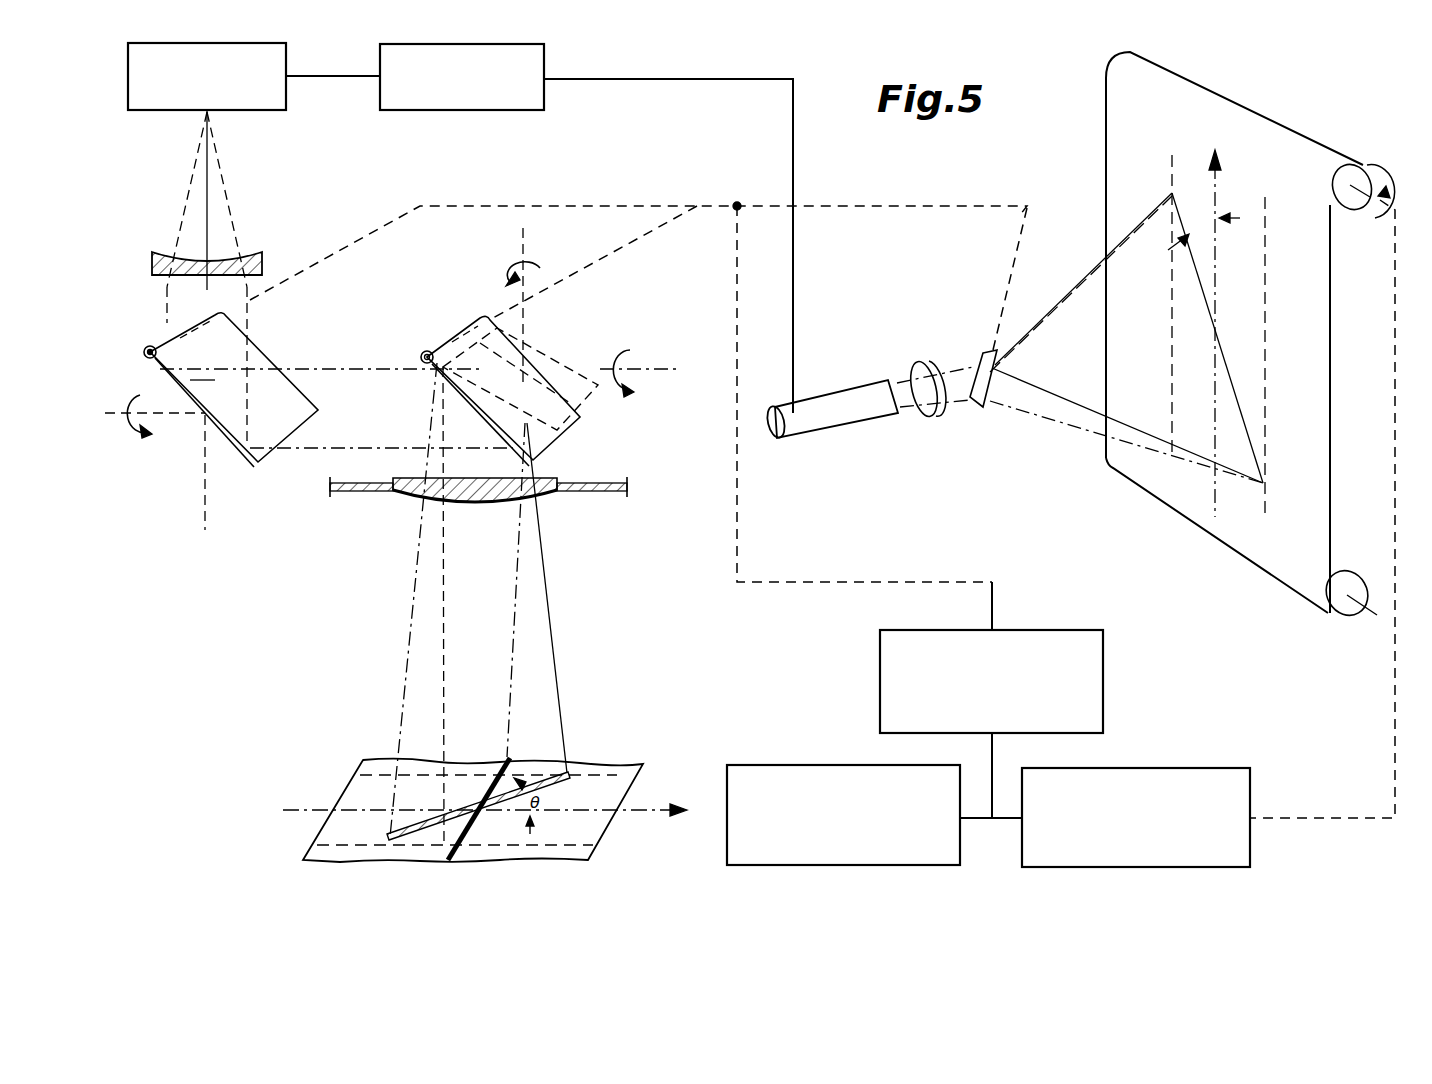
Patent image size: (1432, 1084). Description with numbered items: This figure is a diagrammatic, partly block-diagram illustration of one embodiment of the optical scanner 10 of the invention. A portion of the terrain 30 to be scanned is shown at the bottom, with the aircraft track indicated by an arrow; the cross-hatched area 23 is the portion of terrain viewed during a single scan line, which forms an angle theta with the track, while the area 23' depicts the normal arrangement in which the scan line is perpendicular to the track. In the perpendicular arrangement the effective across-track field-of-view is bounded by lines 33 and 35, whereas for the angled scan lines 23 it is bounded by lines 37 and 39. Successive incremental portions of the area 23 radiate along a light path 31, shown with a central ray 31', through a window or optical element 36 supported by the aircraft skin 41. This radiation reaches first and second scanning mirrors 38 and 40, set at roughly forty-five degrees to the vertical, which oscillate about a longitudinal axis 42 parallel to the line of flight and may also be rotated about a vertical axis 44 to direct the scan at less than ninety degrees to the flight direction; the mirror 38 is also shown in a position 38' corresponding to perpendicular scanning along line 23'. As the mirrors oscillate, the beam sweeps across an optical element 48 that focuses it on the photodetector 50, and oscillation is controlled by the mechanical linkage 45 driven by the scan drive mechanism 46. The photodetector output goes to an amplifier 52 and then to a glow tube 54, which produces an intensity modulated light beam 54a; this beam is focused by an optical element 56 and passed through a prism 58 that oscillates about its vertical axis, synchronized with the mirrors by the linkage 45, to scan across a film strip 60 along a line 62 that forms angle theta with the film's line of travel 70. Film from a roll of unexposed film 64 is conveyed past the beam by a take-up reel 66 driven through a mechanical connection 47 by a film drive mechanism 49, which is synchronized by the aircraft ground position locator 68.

The optical scanner 10 is at (660, 502).
The terrain area viewed during one scan line 23 is at (478, 832).
The perpendicular scan line area 23' is at (486, 825).
The terrain 30 is at (593, 845).
The light path 31 is at (471, 600).
The light path 31' is at (468, 606).
The field-of-view boundary line 33 is at (580, 760).
The field-of-view boundary line 35 is at (360, 862).
The window or optical element 36 is at (395, 500).
The field-of-view boundary line 37 is at (592, 775).
The first scanning mirror 38 is at (523, 391).
The rotated position of mirror 38 38' is at (523, 367).
The field-of-view boundary line 39 is at (573, 862).
The second scanning mirror 40 is at (290, 420).
The aircraft skin 41 is at (565, 495).
The longitudinal axis 42 is at (160, 418).
The vertical axis 44 is at (205, 470).
The mechanical linkage 45 is at (330, 240).
The scan drive mechanism 46 is at (1020, 630).
The mechanical connection 47 is at (1395, 372).
The optical element 48 is at (255, 252).
The film drive mechanism 49 is at (1148, 768).
The photodetector 50 is at (272, 110).
The amplifier 52 is at (482, 110).
The glow tube 54 is at (858, 383).
The light beam 54a is at (1040, 318).
The optical element 56 is at (923, 360).
The prism 58 is at (985, 405).
The film strip 60 is at (1255, 122).
The transversely extended portion of film 62 is at (1232, 383).
The roll of unexposed film 64 is at (1343, 612).
The take-up reel 66 is at (1362, 175).
The aircraft ground position locator 68 is at (800, 765).
The line of travel of the film 70 is at (1217, 483).